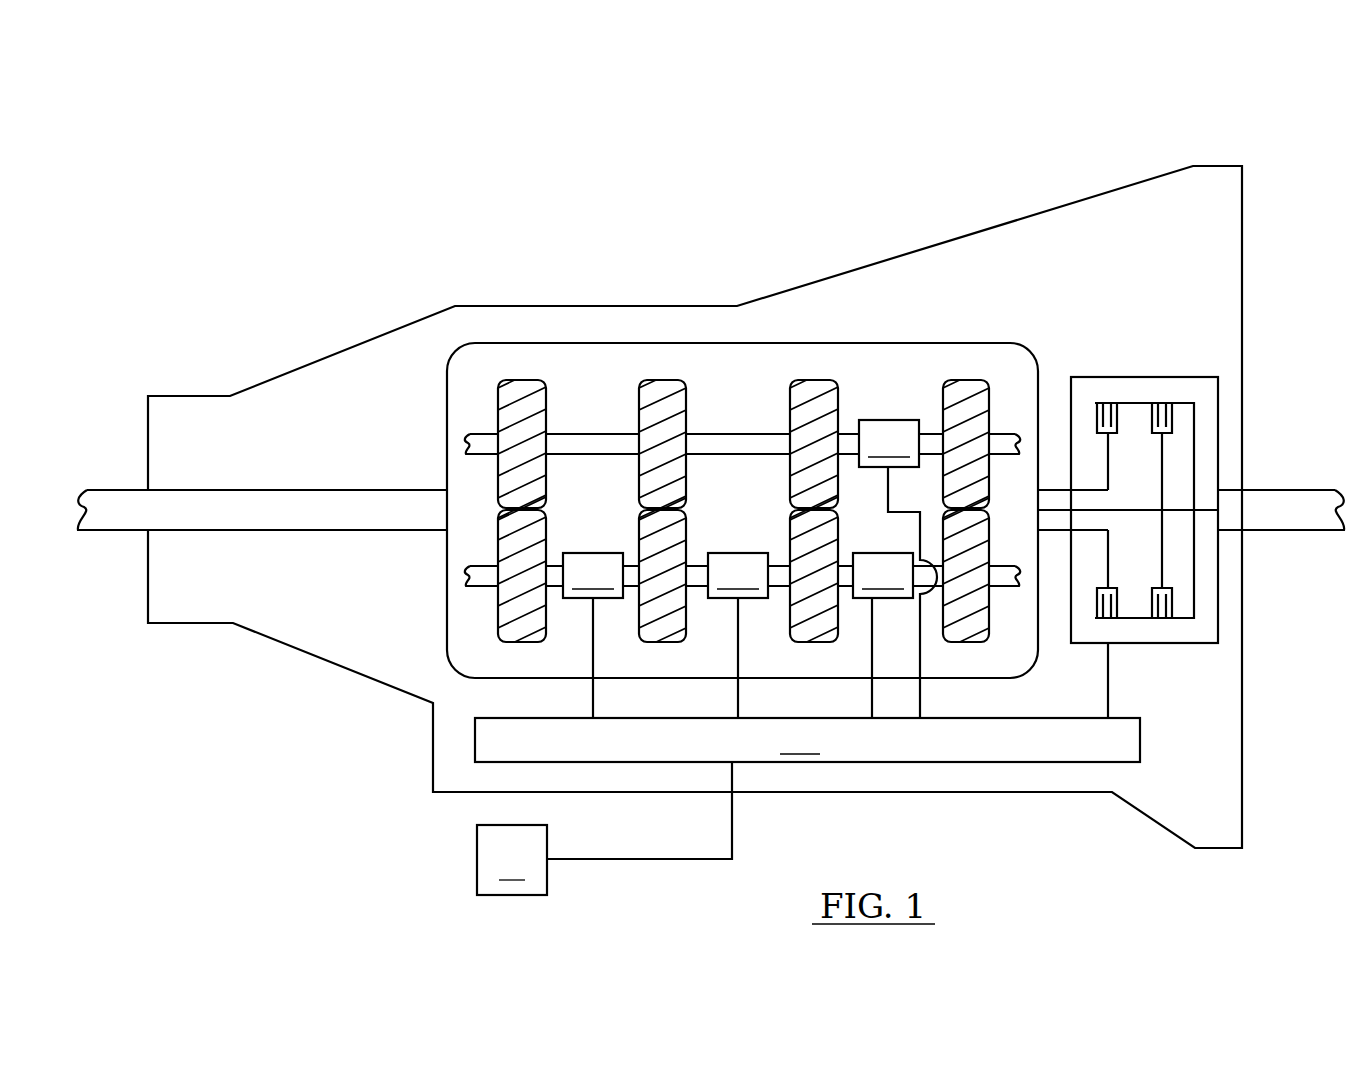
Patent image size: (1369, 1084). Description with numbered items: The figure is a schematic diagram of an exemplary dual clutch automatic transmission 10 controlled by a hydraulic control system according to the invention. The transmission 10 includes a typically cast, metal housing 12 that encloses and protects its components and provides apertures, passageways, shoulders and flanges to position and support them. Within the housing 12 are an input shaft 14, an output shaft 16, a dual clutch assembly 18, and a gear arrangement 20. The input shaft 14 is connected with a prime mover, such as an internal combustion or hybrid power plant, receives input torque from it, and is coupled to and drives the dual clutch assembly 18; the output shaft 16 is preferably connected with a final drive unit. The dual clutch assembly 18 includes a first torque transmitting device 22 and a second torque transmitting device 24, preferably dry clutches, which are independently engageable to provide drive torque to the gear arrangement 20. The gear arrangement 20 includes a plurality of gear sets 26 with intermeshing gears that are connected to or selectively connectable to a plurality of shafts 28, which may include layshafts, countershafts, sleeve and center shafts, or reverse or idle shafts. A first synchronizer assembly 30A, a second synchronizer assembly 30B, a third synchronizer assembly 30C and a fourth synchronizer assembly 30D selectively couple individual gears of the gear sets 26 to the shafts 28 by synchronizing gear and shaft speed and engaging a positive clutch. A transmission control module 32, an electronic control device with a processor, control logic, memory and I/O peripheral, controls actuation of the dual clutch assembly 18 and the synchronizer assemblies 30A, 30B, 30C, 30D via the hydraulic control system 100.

The dual clutch automatic transmission 10 is at (1287, 165).
The housing 12 is at (528, 304).
The input shaft 14 is at (1295, 490).
The output shaft 16 is at (110, 490).
The dual clutch assembly 18 is at (1218, 393).
The gear arrangement 20 is at (502, 340).
The first torque transmitting device 22 is at (1122, 600).
The second torque transmitting device 24 is at (1177, 604).
The gear sets 26 is at (532, 378).
The shafts 28 is at (600, 434).
The first synchronizer assembly 30A is at (593, 635).
The second synchronizer assembly 30B is at (738, 635).
The third synchronizer assembly 30C is at (883, 635).
The fourth synchronizer assembly 30D is at (898, 569).
The transmission control module 32 is at (512, 860).
The hydraulic control system 100 is at (807, 788).